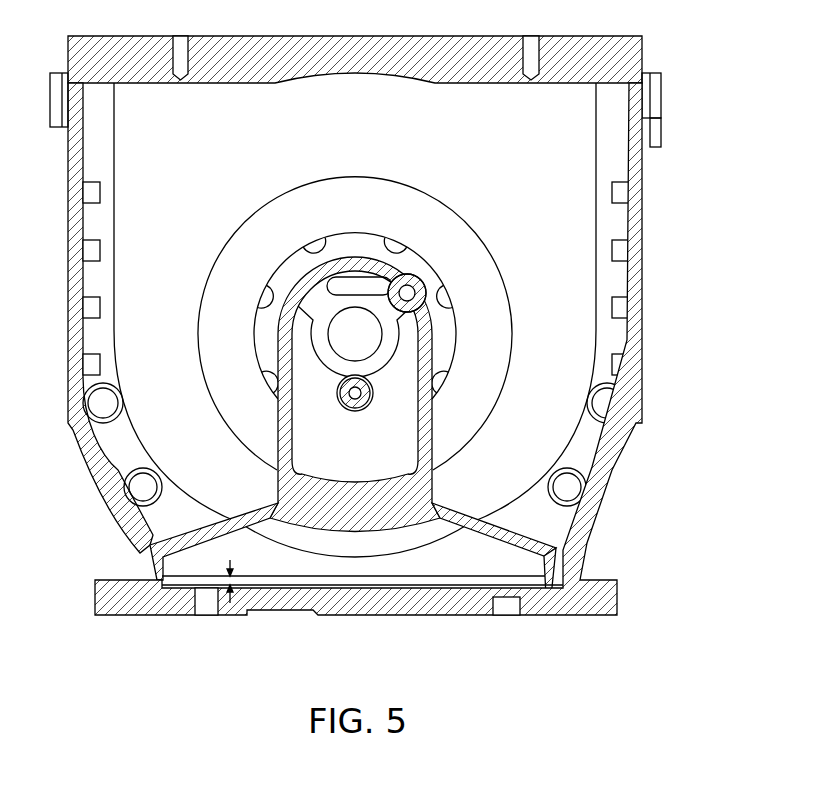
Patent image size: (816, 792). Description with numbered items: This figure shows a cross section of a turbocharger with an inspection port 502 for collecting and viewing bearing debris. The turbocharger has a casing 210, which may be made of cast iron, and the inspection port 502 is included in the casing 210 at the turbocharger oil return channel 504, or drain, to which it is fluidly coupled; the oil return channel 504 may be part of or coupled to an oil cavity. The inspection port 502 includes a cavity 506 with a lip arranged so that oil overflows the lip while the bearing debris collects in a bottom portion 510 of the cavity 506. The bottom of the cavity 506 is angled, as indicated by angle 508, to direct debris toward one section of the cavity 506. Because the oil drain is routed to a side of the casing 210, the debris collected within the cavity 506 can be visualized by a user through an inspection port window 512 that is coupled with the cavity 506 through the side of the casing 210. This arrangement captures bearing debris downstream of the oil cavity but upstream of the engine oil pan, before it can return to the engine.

The casing 210 is at (553, 163).
The inspection port 502 is at (602, 557).
The oil return channel 504 is at (207, 598).
The cavity 506 is at (205, 557).
The angle 508 is at (237, 605).
The bottom portion 510 is at (552, 582).
The inspection port window 512 is at (577, 567).